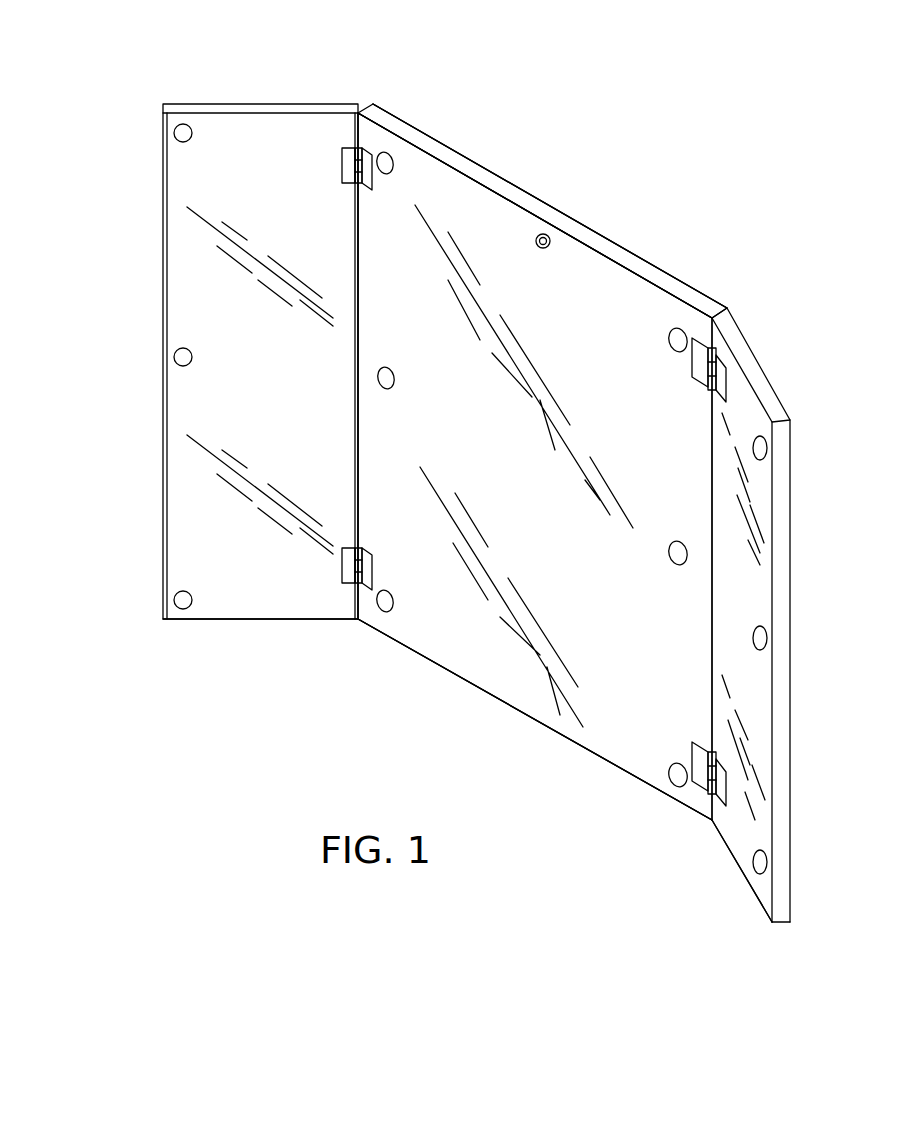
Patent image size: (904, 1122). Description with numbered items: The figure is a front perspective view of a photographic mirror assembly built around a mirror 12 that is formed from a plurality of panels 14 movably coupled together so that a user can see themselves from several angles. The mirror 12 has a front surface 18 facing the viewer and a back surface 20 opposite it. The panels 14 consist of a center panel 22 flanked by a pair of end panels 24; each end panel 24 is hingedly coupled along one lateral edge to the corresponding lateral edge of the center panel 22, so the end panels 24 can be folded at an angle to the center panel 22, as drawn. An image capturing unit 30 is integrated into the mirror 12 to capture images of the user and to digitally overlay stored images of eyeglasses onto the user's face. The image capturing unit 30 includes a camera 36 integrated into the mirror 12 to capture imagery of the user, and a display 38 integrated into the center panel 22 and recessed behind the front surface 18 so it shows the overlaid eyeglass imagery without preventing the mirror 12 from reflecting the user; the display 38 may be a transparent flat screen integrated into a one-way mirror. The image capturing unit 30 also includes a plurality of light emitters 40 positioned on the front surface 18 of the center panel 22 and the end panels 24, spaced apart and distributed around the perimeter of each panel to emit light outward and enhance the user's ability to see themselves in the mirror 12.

The mirror 12 is at (509, 468).
The panels 14 is at (238, 84).
The front surface 18 is at (636, 700).
The back surface 20 is at (697, 298).
The center panel 22 is at (540, 745).
The end panels 24 is at (243, 630).
The image capturing unit 30 is at (561, 234).
The camera 36 is at (536, 241).
The display 38 is at (451, 585).
The light emitters 40 is at (178, 141).